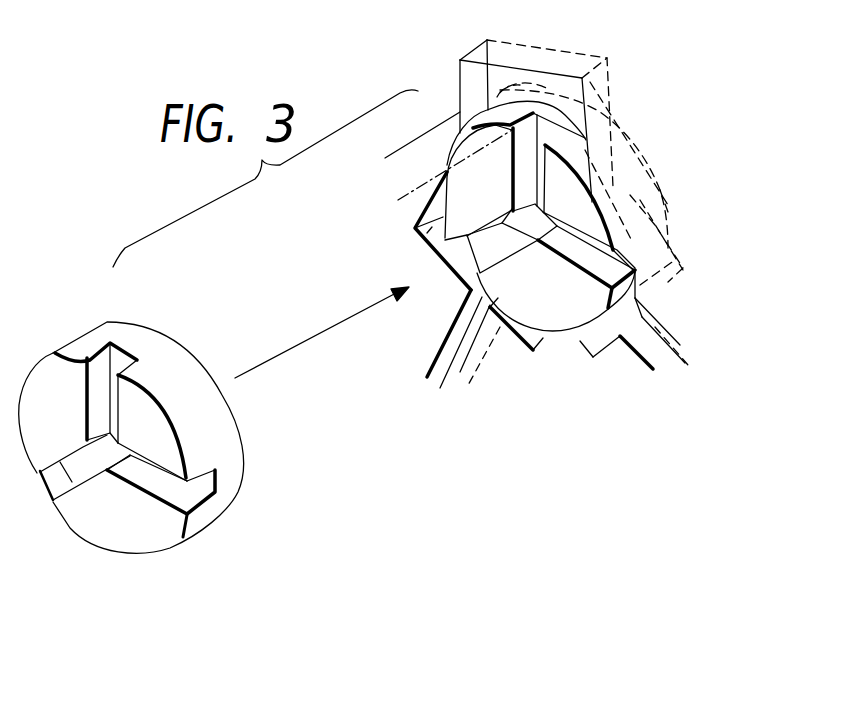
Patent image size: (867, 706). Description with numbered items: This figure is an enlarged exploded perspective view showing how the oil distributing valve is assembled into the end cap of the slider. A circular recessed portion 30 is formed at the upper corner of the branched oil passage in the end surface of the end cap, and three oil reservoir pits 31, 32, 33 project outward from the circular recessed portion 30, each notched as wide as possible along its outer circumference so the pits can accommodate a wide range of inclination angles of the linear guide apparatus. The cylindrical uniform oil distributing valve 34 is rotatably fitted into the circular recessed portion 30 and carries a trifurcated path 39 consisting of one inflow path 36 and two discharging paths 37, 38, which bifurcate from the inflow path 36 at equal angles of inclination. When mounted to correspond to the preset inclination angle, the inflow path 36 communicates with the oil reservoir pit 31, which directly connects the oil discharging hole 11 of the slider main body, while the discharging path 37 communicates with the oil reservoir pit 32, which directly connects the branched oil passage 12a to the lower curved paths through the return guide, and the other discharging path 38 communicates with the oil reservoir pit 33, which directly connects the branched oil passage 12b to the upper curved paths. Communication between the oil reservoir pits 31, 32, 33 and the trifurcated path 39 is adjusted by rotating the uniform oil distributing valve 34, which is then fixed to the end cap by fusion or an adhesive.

The oil discharging hole 11 is at (505, 82).
The branched oil passage 12a is at (432, 355).
The branched oil passage 12b is at (655, 372).
The circular recessed portion 30 is at (605, 203).
The oil reservoir pit 31 is at (560, 83).
The oil reservoir pit 32 is at (430, 236).
The oil reservoir pit 33 is at (652, 298).
The uniform oil distributing valve 34 is at (99, 320).
The inflow path 36 is at (100, 413).
The discharging path 37 is at (73, 463).
The discharging path 38 is at (172, 491).
The trifurcated path 39 is at (377, 383).